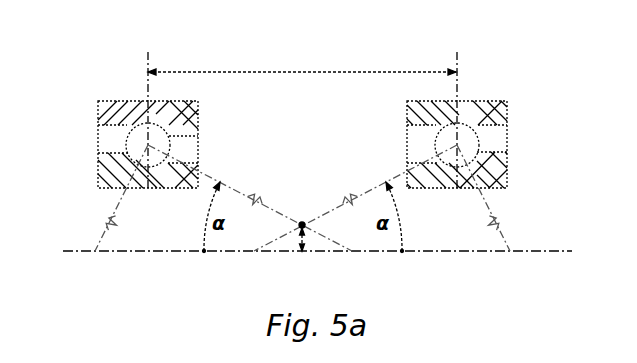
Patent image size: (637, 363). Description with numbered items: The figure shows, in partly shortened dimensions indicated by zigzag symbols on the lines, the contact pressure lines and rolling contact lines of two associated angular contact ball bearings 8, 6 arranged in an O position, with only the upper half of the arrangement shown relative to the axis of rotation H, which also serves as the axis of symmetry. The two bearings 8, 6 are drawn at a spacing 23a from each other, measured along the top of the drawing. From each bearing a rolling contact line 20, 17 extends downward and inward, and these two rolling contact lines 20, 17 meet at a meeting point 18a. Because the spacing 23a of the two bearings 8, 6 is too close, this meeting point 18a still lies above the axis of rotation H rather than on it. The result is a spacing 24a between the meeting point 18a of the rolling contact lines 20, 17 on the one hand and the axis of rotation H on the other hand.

The angular contact ball bearing 6 is at (514, 70).
The angular contact ball bearing 8 is at (80, 85).
The rolling contact line 17 is at (398, 174).
The meeting point 18a is at (302, 222).
The rolling contact line 20 is at (205, 176).
The spacing 23a is at (304, 72).
The spacing 24a is at (300, 238).
The axis of rotation H is at (68, 253).